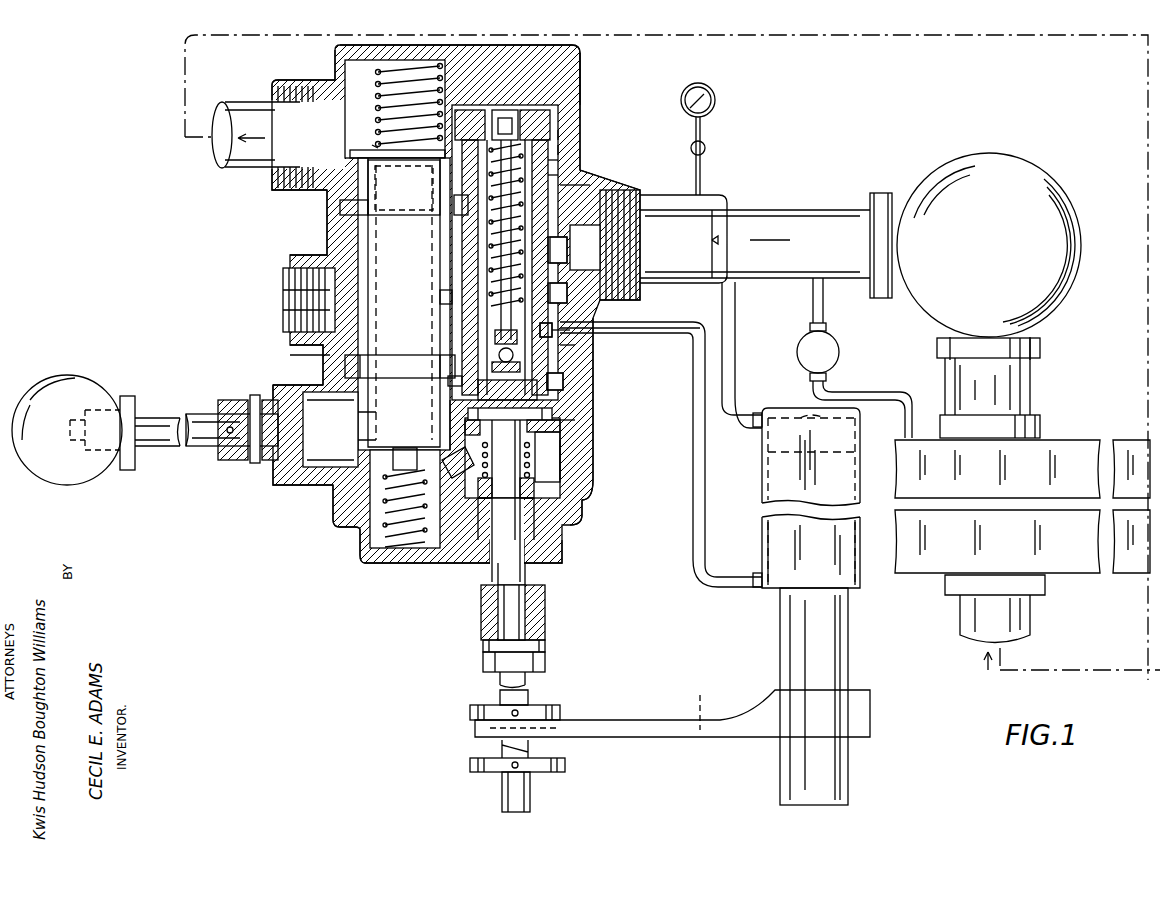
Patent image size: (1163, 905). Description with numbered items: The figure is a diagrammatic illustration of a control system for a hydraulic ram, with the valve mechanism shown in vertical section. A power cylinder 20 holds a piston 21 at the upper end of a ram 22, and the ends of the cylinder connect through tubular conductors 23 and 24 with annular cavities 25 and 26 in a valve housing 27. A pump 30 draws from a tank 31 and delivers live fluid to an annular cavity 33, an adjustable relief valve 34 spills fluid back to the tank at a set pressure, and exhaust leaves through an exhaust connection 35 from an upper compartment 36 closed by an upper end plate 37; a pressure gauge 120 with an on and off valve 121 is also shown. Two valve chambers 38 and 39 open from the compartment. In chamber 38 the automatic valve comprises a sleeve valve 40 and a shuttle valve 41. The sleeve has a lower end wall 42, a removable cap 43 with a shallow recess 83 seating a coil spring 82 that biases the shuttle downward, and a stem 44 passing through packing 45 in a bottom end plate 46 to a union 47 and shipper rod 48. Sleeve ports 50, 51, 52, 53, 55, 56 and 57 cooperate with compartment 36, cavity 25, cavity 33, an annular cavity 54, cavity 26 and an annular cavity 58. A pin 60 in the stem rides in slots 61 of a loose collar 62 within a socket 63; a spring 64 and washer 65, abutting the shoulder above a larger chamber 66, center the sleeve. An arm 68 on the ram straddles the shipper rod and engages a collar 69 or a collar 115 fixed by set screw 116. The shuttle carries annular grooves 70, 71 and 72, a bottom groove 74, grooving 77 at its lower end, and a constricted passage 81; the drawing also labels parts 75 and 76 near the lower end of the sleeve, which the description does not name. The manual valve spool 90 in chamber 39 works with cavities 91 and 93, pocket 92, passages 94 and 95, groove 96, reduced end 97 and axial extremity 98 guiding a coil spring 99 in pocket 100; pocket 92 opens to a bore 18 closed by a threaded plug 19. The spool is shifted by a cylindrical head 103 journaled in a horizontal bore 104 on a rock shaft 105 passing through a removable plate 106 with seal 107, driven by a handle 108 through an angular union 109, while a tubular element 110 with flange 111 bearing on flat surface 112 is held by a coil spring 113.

The bore 18 is at (318, 252).
The threaded plug 19 is at (288, 298).
The power cylinder 20 is at (855, 535).
The piston 21 is at (850, 430).
The ram 22 is at (845, 660).
The tubular conductor 23 is at (732, 340).
The tubular conductor 24 is at (693, 412).
The annular cavity 25 is at (548, 175).
The annular cavity 26 is at (565, 350).
The valve housing 27 is at (590, 480).
The pump 30 is at (1055, 232).
The tank 31 is at (1065, 440).
The annular cavity 33 is at (595, 240).
The adjustable relief valve 34 is at (838, 352).
The exhaust connection 35 is at (260, 170).
The compartment 36 is at (335, 75).
The upper end plate 37 is at (578, 50).
The valve chamber 38 is at (555, 428).
The valve chamber 39 is at (330, 333).
The sleeve valve 40 is at (568, 135).
The shuttle valve 41 is at (560, 148).
The lower end wall 42 is at (512, 451).
The removable cap 43 is at (468, 112).
The stem 44 is at (528, 576).
The packing 45 is at (555, 560).
The bottom end plate 46 is at (410, 565).
The union 47 is at (545, 640).
The shipper rod 48 is at (530, 800).
The ports 50 is at (483, 152).
The ports 51 is at (545, 160).
The ports 52 is at (478, 242).
The ports 53 is at (575, 330).
The annular cavity 54 is at (600, 320).
The ports 55 is at (570, 345).
The ports 56 is at (462, 332).
The ports 57 is at (563, 382).
The annular cavity 58 is at (552, 410).
The pin 60 is at (506, 519).
The slots 61 is at (575, 528).
The loose collar 62 is at (492, 495).
The socket 63 is at (470, 565).
The spring 64 is at (492, 482).
The washer 65 is at (490, 452).
The chamber 66 is at (560, 455).
The arm 68 is at (635, 720).
The collar 69 is at (470, 712).
The annular groove 70 is at (470, 200).
The annular groove 71 is at (560, 190).
The annular groove 72 is at (518, 350).
The bottom groove 74 is at (447, 418).
The seat 75 is at (540, 372).
The flange 76 is at (440, 370).
The groove 77 is at (506, 501).
The constricted passage 81 is at (507, 110).
The coil spring 82 is at (590, 110).
The shallow recess 83 is at (535, 112).
The spool 90 is at (404, 302).
The annular cavity 91 is at (362, 210).
The pocket 92 is at (440, 296).
The annular cavity 93 is at (325, 362).
The passage 94 is at (452, 470).
The passage 95 is at (455, 380).
The annular groove 96 is at (370, 240).
The reduced end 97 is at (355, 428).
The axial extremity 98 is at (405, 497).
The coil spring 99 is at (355, 527).
The pocket 100 is at (362, 550).
The cylindrical head 103 is at (370, 432).
The horizontal bore 104 is at (318, 482).
The rock shaft 105 is at (254, 463).
The removable plate 106 is at (275, 393).
The seal 107 is at (270, 480).
The handle 108 is at (160, 415).
The angular union 109 is at (225, 448).
The tubular element 110 is at (385, 150).
The flange 111 is at (420, 160).
The flat surface 112 is at (315, 190).
The coil spring 113 is at (375, 145).
The collar 115 is at (566, 765).
The set screw 116 is at (512, 768).
The pressure gauge 120 is at (715, 100).
The on and off valve 121 is at (705, 148).